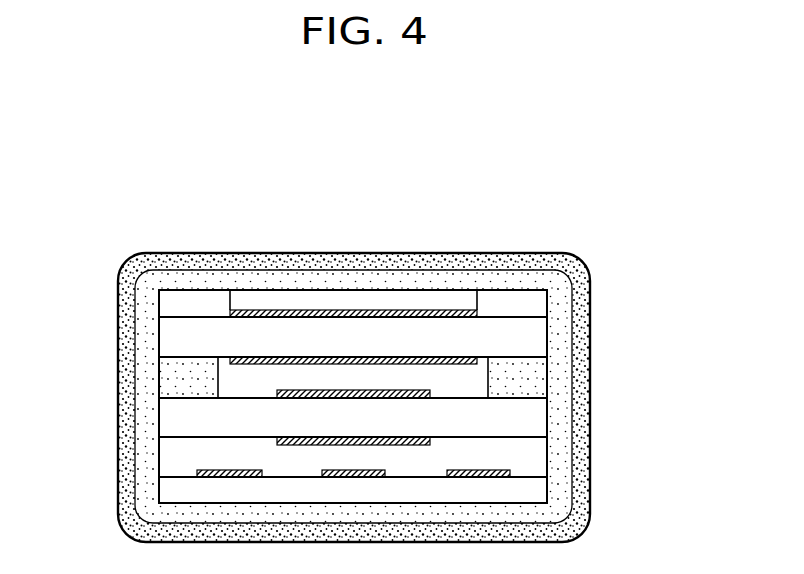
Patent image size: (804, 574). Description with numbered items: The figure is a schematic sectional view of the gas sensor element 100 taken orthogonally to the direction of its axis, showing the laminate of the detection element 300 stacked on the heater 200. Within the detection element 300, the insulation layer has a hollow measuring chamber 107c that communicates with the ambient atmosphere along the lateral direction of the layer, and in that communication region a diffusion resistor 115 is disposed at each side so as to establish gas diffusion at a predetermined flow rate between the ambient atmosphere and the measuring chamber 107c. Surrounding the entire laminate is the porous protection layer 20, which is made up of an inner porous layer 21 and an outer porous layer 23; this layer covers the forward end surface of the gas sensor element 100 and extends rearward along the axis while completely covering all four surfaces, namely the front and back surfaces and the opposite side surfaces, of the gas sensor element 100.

The gas sensor element 100 is at (541, 190).
The porous protection layer 20 is at (250, 177).
The inner porous layer 21 is at (160, 253).
The outer porous layer 23 is at (228, 278).
The diffusion resistor 115 is at (178, 380).
The measuring chamber 107c is at (355, 388).
The detection element 300 is at (550, 290).
The heater 200 is at (550, 437).